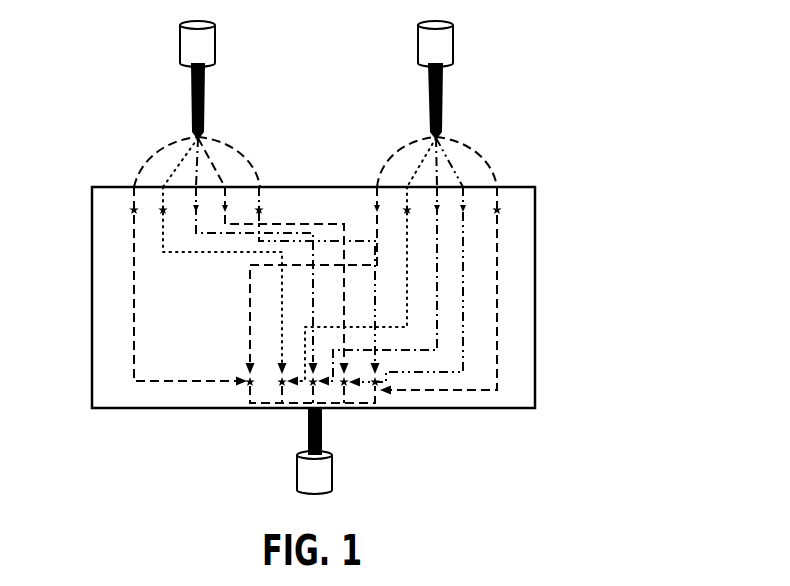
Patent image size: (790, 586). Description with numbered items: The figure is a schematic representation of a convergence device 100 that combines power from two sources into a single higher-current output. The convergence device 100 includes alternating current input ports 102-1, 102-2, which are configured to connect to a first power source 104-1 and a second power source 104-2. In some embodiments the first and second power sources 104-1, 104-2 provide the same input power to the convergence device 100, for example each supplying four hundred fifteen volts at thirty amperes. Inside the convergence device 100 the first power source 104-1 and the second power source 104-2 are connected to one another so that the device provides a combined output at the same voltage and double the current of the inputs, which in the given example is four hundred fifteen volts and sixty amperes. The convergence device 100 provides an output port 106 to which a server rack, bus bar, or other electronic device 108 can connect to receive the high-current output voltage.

The convergence device 100 is at (624, 169).
The alternating current (AC) input port 102-1 is at (126, 178).
The alternating current (AC) input port 102-2 is at (504, 178).
The first power source 104-1 is at (180, 42).
The second power source 104-2 is at (453, 41).
The output port 106 is at (322, 411).
The electronic device 108 is at (332, 472).